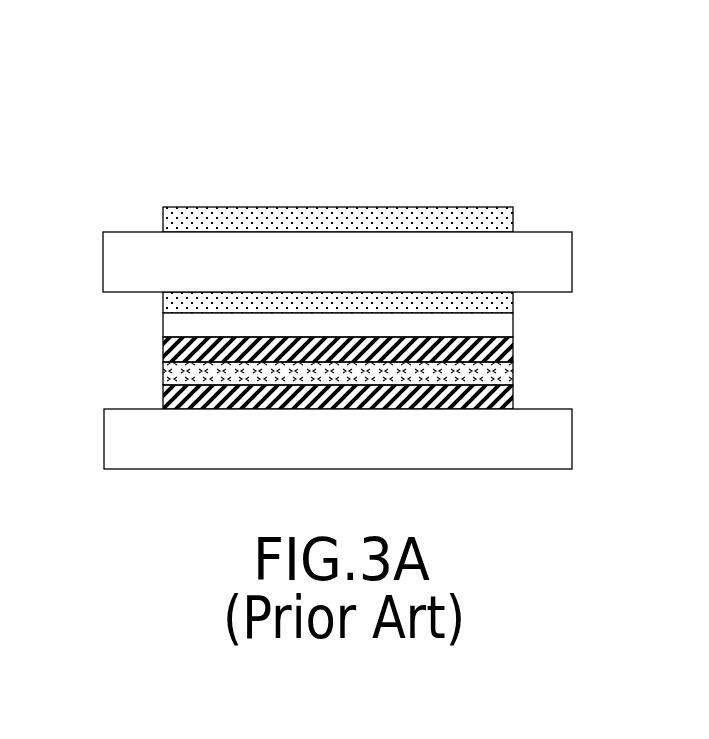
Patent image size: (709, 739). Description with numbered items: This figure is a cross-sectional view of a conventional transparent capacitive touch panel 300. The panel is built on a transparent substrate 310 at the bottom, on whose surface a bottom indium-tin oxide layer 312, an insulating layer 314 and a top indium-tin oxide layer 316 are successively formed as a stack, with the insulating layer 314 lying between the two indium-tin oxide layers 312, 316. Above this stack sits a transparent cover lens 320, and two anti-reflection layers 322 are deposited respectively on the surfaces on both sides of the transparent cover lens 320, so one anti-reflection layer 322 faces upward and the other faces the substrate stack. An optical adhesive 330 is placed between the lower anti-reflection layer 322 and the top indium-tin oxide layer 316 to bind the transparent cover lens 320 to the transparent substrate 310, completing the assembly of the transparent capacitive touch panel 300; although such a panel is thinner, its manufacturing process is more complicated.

The transparent capacitive touch panel 300 is at (362, 386).
The transparent substrate 310 is at (550, 448).
The bottom indium-tin oxide layer 312 is at (513, 390).
The insulating layer 314 is at (500, 372).
The top indium-tin oxide layer 316 is at (513, 343).
The transparent cover lens 320 is at (548, 262).
The anti-reflection layer 322 is at (502, 222).
The optical adhesive 330 is at (177, 323).